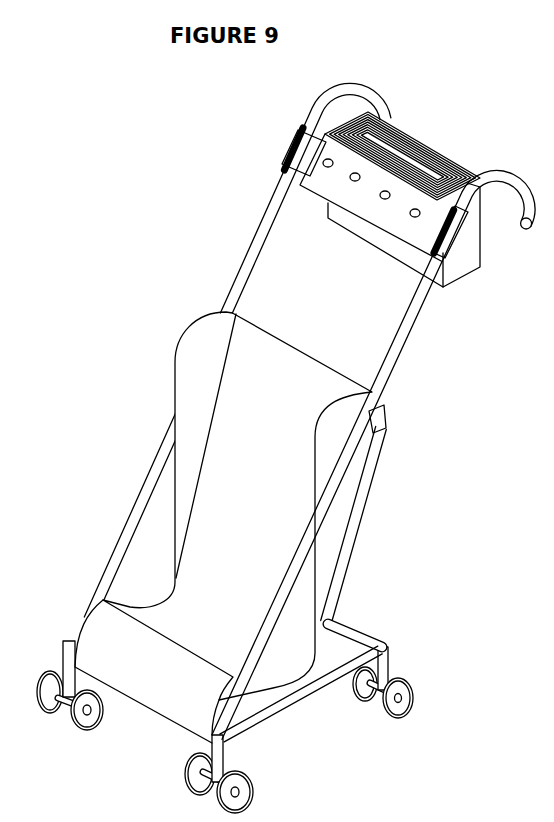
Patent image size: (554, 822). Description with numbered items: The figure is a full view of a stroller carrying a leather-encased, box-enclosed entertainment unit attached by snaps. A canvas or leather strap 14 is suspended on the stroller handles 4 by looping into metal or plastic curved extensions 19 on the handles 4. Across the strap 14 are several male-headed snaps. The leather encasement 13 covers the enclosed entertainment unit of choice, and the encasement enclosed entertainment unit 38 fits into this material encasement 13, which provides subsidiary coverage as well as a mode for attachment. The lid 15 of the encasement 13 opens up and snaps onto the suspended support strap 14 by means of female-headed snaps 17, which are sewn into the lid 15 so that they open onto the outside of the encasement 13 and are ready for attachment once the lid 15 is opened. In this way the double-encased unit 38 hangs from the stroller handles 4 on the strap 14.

The stroller handles 4 is at (316, 113).
The leather encasement 13 is at (437, 170).
The strap 14 is at (308, 178).
The lid 15 is at (367, 232).
The female-headed snaps 17 is at (352, 181).
The curved extensions 19 is at (292, 158).
The encasement enclosed entertainment unit 38 is at (440, 196).